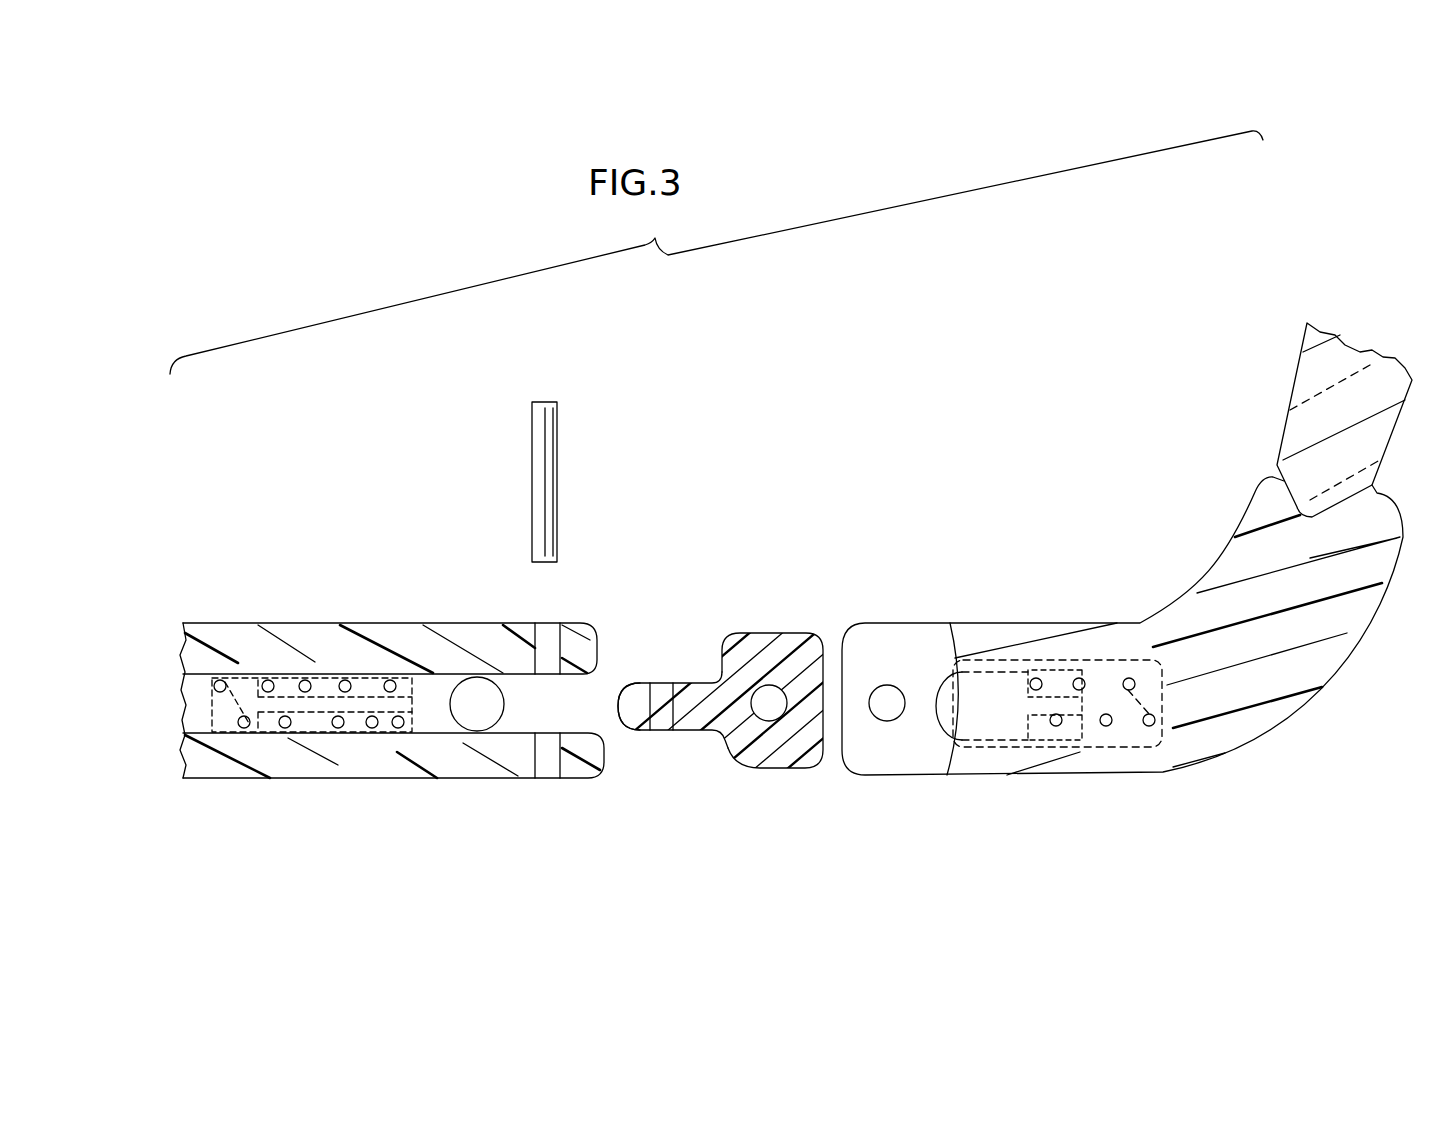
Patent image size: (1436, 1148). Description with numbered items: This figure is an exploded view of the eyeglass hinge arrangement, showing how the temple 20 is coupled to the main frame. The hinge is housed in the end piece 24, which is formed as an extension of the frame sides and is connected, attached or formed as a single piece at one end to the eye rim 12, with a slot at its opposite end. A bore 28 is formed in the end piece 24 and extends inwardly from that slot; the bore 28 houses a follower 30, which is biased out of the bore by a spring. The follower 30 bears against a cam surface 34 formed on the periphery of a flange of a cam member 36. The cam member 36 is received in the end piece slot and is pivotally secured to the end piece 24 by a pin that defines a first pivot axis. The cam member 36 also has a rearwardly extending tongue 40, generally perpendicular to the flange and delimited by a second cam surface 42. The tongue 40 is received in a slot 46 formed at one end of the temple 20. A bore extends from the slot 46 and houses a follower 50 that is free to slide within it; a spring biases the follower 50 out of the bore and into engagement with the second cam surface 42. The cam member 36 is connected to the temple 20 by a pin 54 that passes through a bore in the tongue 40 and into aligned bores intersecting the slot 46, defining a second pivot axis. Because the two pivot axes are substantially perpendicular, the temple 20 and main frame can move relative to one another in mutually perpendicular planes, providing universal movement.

The eye rim 12 is at (1283, 414).
The temple 20 is at (313, 632).
The end piece 24 is at (1230, 568).
The bore 28 is at (1103, 747).
The follower 30 is at (1003, 742).
The cam surface 34 is at (810, 766).
The cam member 36 is at (758, 634).
The tongue 40 is at (697, 680).
The second cam surface 42 is at (618, 718).
The slot 46 is at (505, 673).
The follower 50 is at (350, 712).
The pin 54 is at (552, 468).